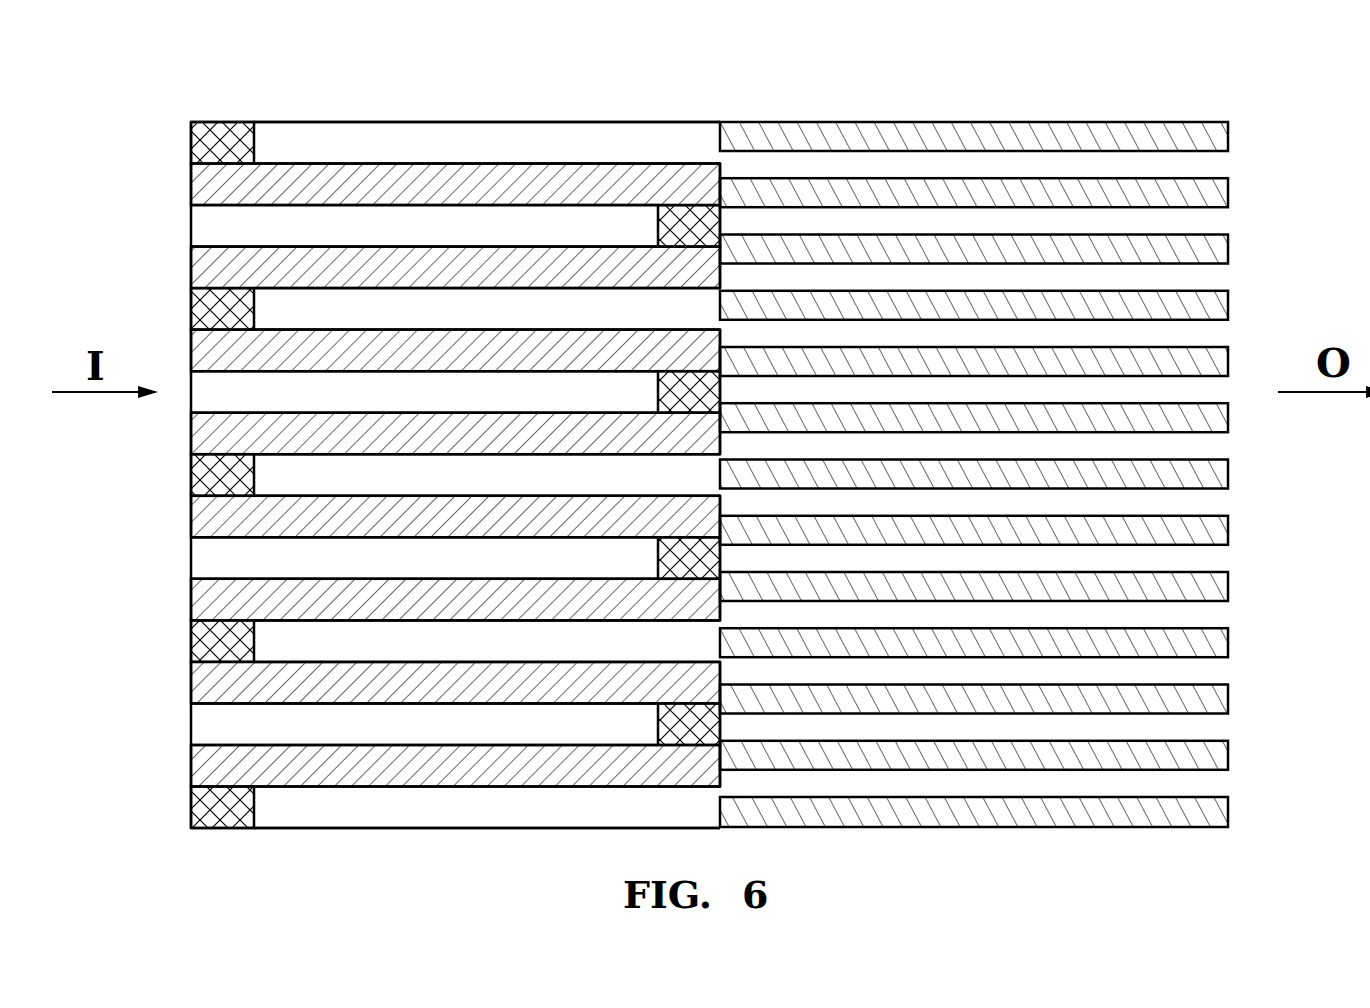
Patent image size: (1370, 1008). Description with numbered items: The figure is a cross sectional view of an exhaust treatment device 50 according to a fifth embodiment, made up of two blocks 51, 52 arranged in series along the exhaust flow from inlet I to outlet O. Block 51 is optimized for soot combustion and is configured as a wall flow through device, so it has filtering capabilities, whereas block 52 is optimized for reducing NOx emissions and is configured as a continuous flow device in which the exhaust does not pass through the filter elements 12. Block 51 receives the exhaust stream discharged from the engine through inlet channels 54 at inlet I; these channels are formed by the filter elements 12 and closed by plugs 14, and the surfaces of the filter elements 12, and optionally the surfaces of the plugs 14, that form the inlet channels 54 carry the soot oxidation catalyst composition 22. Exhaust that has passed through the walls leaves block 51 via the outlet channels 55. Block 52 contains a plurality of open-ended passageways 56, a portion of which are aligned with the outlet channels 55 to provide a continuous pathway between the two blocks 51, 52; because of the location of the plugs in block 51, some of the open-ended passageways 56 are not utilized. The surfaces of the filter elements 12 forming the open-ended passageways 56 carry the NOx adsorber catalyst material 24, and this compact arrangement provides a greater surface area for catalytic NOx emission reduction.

The filter elements 12 is at (198, 602).
The plugs 14 is at (200, 643).
The soot oxidation catalyst composition 22 is at (223, 577).
The NOx adsorber catalyst material 24 is at (355, 662).
The exhaust treatment device 50 is at (178, 95).
The block 51 is at (704, 95).
The block 52 is at (1222, 95).
The inlet channels 54 is at (213, 228).
The outlet channels 55 is at (423, 143).
The open-ended passageways 56 is at (1217, 218).